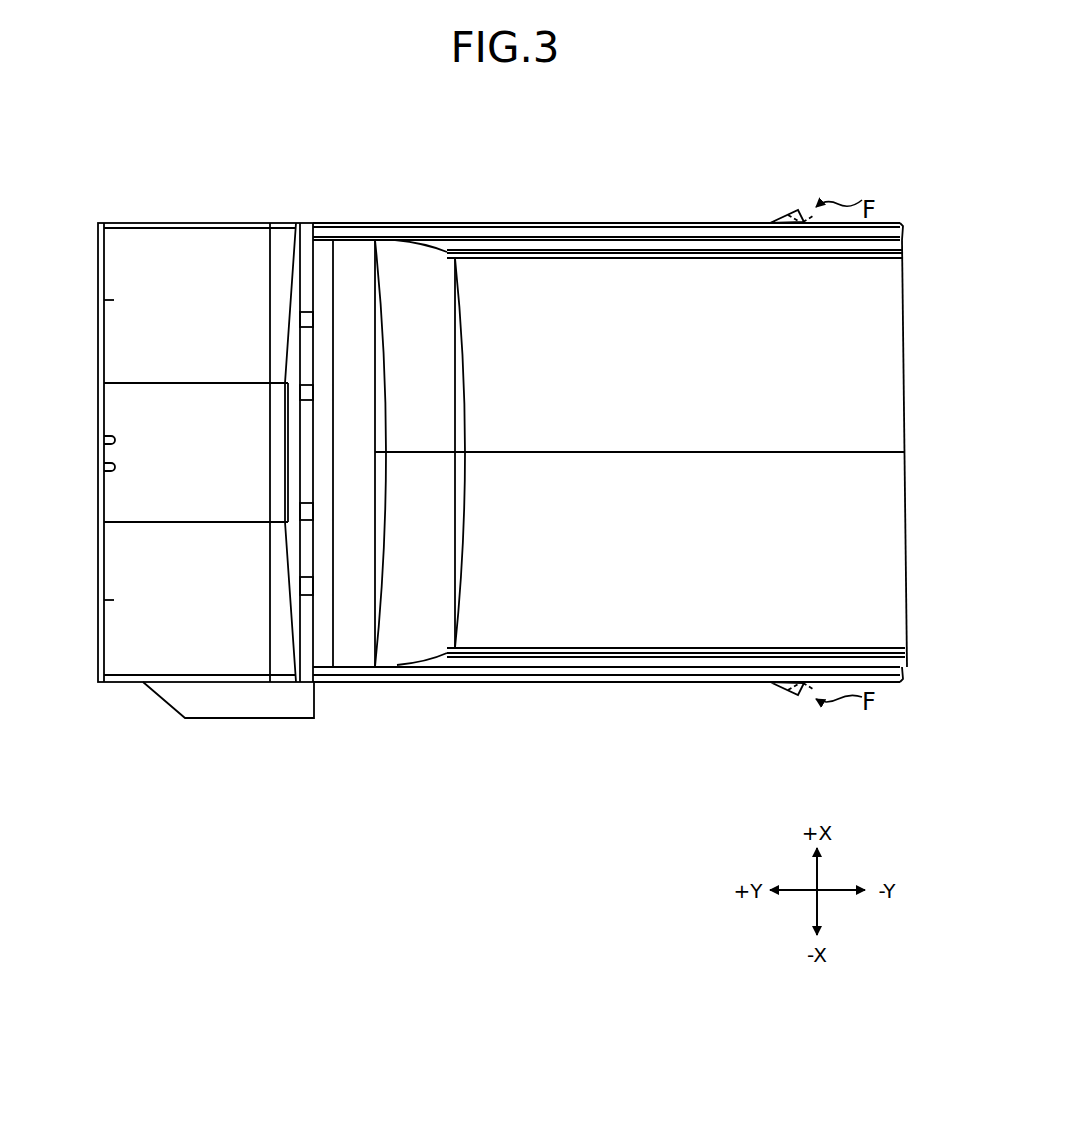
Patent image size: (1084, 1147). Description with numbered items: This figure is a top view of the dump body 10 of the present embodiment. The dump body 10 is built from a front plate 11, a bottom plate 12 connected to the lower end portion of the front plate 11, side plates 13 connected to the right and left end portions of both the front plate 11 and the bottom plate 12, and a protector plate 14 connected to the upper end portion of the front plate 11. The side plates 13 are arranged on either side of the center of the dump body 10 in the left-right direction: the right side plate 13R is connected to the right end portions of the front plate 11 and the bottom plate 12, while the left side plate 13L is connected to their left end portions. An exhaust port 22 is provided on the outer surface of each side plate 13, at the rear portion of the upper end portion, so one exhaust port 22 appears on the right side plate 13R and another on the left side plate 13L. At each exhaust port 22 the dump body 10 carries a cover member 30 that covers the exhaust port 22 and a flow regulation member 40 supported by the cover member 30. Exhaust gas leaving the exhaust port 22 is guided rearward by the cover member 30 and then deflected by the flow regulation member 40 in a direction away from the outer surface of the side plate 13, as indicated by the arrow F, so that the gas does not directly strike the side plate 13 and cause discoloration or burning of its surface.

The dump body 10 is at (510, 220).
The front plate 11 is at (356, 382).
The bottom plate 12 is at (888, 425).
The side plate 13 is at (606, 455).
The right side plate 13R is at (577, 235).
The left side plate 13L is at (560, 668).
The protector plate 14 is at (115, 412).
The exhaust port 22 is at (799, 211).
The cover member 30 is at (773, 222).
The flow regulation member 40 is at (808, 212).